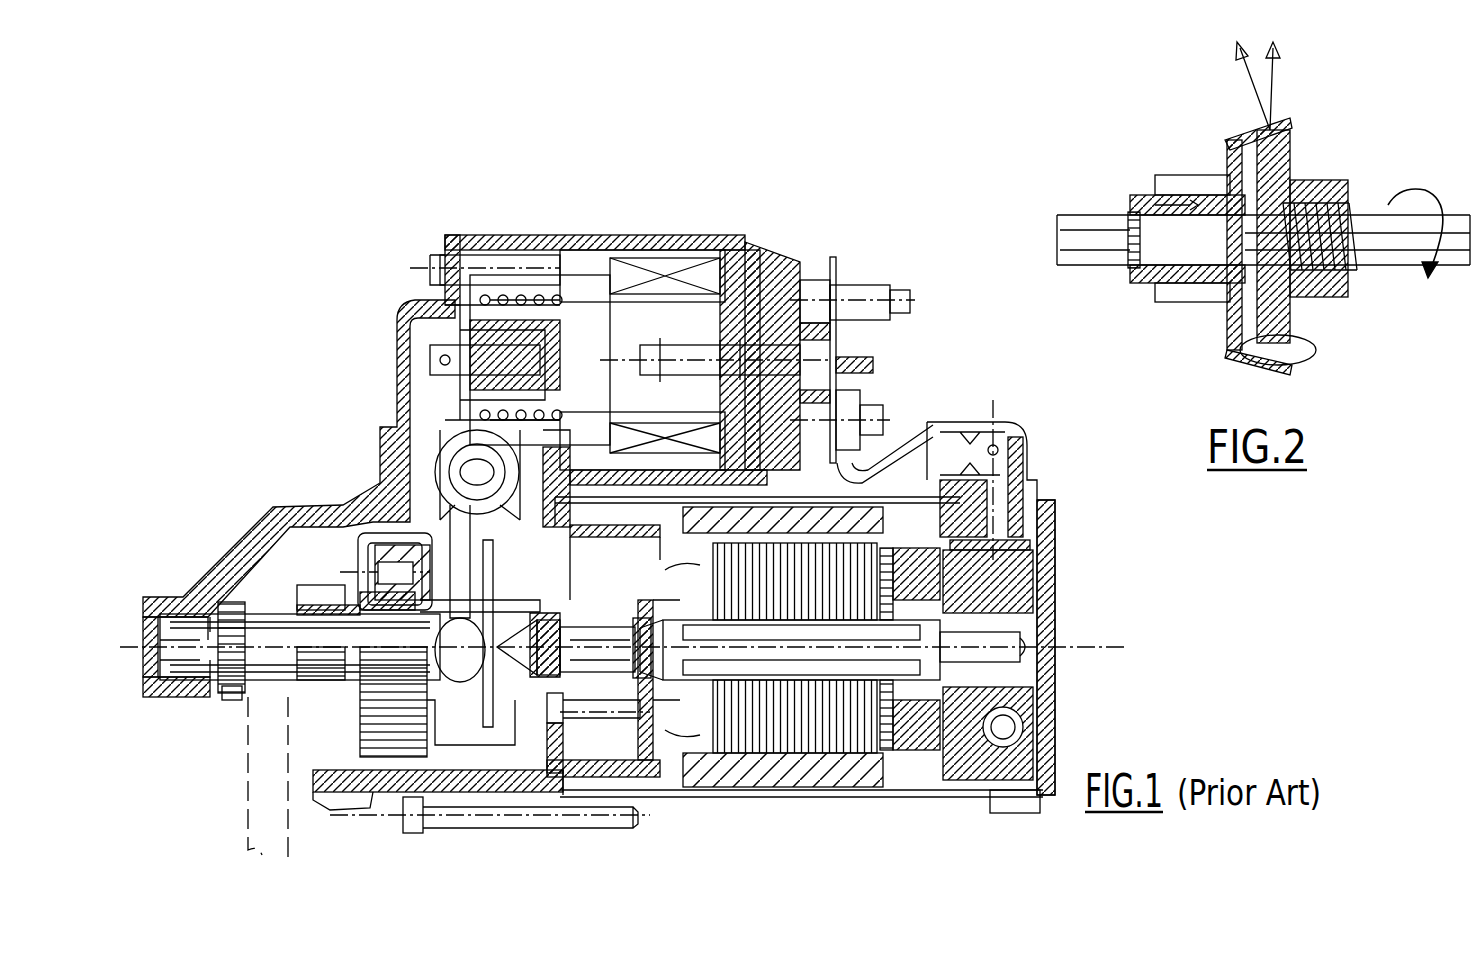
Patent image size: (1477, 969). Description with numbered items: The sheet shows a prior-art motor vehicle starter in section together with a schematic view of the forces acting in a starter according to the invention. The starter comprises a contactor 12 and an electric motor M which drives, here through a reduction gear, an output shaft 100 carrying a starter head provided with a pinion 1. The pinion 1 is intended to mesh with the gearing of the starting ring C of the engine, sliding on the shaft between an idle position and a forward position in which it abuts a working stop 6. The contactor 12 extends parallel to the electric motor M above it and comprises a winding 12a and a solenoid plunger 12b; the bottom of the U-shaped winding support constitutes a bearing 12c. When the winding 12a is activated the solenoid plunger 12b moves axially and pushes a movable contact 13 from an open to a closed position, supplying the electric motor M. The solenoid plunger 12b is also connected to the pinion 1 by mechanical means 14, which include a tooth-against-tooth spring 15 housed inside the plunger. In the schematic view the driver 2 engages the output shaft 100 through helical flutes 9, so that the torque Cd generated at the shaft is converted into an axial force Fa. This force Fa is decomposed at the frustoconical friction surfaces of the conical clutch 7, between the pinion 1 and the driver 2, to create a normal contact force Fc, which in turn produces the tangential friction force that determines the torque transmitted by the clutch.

In FIG. 1, the pinion 1 is at (283, 705).
In FIG. 2, the pinion 1 is at (1217, 293).
In FIG. 2, the driver 2 is at (1318, 287).
In FIG. 1, the working stop 6 is at (230, 690).
In FIG. 2, the working stop 6 is at (1140, 285).
In FIG. 2, the conical clutch 7 is at (1323, 350).
In FIG. 2, the helical flutes 9 is at (1352, 273).
In FIG. 1, the contactor 12 is at (718, 220).
In FIG. 1, the winding 12a is at (632, 262).
In FIG. 1, the solenoid plunger 12b is at (455, 300).
In FIG. 1, the bearing 12c is at (672, 265).
In FIG. 1, the movable contact 13 is at (737, 350).
In FIG. 1, the mechanical means 14 is at (380, 405).
In FIG. 1, the tooth-against-tooth spring 15 is at (400, 325).
In FIG. 1, the output shaft 100 is at (278, 510).
In FIG. 2, the output shaft 100 is at (1375, 227).
In FIG. 1, the starting ring C is at (275, 775).
In FIG. 1, the electric motor M is at (760, 813).
In FIG. 2, the axial force Fa is at (1242, 130).
In FIG. 2, the normal contact force Fc is at (1232, 76).
In FIG. 2, the torque Cd is at (1415, 206).